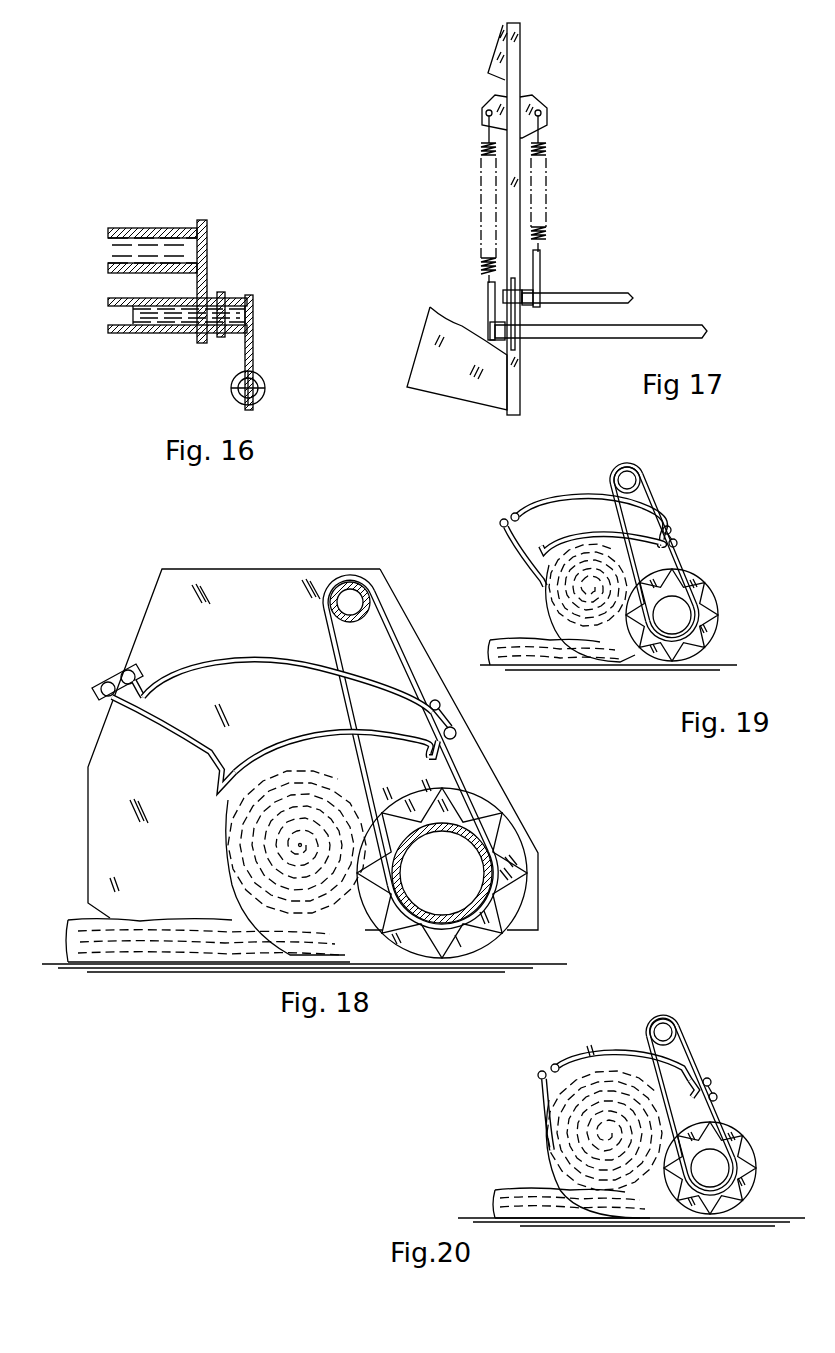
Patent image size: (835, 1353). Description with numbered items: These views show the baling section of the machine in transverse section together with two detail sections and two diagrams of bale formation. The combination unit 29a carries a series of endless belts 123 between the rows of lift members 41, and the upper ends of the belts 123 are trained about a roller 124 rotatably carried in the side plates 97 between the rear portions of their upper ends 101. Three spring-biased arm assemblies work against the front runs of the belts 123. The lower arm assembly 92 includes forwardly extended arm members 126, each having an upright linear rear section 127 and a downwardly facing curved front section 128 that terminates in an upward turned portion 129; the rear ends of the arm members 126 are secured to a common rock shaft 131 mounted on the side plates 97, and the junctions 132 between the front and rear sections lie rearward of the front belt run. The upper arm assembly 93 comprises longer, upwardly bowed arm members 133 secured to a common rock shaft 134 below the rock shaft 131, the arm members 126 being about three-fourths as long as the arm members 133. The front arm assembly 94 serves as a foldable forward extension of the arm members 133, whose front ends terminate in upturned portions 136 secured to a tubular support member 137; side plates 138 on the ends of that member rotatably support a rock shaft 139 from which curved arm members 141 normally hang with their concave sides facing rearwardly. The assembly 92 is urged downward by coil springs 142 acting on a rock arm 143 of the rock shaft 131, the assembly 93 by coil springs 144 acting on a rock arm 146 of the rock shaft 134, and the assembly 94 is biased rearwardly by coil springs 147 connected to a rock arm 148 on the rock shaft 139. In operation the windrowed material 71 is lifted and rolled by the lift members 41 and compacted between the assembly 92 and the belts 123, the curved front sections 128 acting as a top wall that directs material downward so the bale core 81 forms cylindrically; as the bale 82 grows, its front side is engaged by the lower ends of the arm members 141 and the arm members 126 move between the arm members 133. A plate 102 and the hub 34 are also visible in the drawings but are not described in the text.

In FIG. 16, the tubular support member 137 is at (140, 228).
In FIG. 18, the tubular support member 137 is at (136, 665).
In FIG. 16, the side plates 138 is at (207, 262).
In FIG. 18, the side plates 138 is at (121, 671).
In FIG. 16, the rock shaft 139 is at (140, 333).
In FIG. 18, the rock shaft 139 is at (101, 693).
In FIG. 16, the rock arm 148 is at (253, 349).
In FIG. 16, the coil springs 147 is at (264, 392).
In FIG. 17, the side plates 97 is at (518, 78).
In FIG. 18, the side plates 97 is at (160, 600).
In FIG. 17, the coil springs 144 is at (480, 223).
In FIG. 17, the coil springs 142 is at (541, 209).
In FIG. 17, the rock arm 143 is at (542, 272).
In FIG. 17, the rock arm 146 is at (488, 308).
In FIG. 17, the rock shaft 131 is at (608, 293).
In FIG. 18, the rock shaft 131 is at (437, 700).
In FIG. 19, the rock shaft 131 is at (671, 527).
In FIG. 20, the rock shaft 131 is at (712, 1080).
In FIG. 17, the rock shaft 134 is at (672, 325).
In FIG. 18, the rock shaft 134 is at (456, 730).
In FIG. 19, the rock shaft 134 is at (678, 542).
In FIG. 20, the rock shaft 134 is at (718, 1098).
In FIG. 17, the support plate 102 is at (420, 357).
In FIG. 18, the upper ends 101 is at (272, 582).
In FIG. 18, the roller 124 is at (365, 590).
In FIG. 18, the endless belts 123 is at (405, 657).
In FIG. 19, the endless belts 123 is at (651, 503).
In FIG. 20, the endless belts 123 is at (687, 1036).
In FIG. 18, the lift members 41 is at (497, 813).
In FIG. 19, the lift members 41 is at (700, 592).
In FIG. 20, the lift members 41 is at (735, 1152).
In FIG. 18, the wheel hub 34 is at (470, 893).
In FIG. 18, the combination unit 29a is at (510, 834).
In FIG. 18, the upturned portions 136 is at (148, 688).
In FIG. 18, the arm members 133 is at (256, 664).
In FIG. 19, the arm members 133 is at (548, 508).
In FIG. 20, the arm members 133 is at (575, 1055).
In FIG. 18, the upper arm assembly 93 is at (302, 648).
In FIG. 19, the upper arm assembly 93 is at (578, 498).
In FIG. 20, the upper arm assembly 93 is at (571, 1058).
In FIG. 18, the arm members 141 is at (135, 722).
In FIG. 19, the arm members 141 is at (522, 548).
In FIG. 20, the arm members 141 is at (540, 1128).
In FIG. 18, the front arm assembly 94 is at (151, 746).
In FIG. 19, the front arm assembly 94 is at (512, 555).
In FIG. 20, the front arm assembly 94 is at (536, 1098).
In FIG. 18, the upward turned portion 129 is at (210, 775).
In FIG. 18, the lower arm assembly 92 is at (208, 787).
In FIG. 19, the lower arm assembly 92 is at (605, 539).
In FIG. 20, the lower arm assembly 92 is at (592, 1050).
In FIG. 18, the front curved section 128 is at (237, 768).
In FIG. 18, the arm members 126 is at (331, 735).
In FIG. 20, the arm members 126 is at (696, 1086).
In FIG. 18, the rear section 127 is at (426, 748).
In FIG. 18, the junctions 132 is at (431, 757).
In FIG. 18, the bale 82 is at (246, 868).
In FIG. 20, the bale 82 is at (568, 1162).
In FIG. 18, the bale core 81 is at (300, 841).
In FIG. 19, the bale core 81 is at (587, 590).
In FIG. 18, the windrowed material 71 is at (70, 920).
In FIG. 19, the windrowed material 71 is at (533, 636).
In FIG. 20, the windrowed material 71 is at (496, 1190).